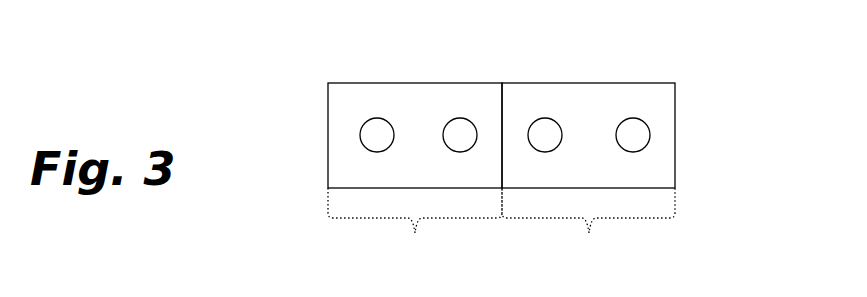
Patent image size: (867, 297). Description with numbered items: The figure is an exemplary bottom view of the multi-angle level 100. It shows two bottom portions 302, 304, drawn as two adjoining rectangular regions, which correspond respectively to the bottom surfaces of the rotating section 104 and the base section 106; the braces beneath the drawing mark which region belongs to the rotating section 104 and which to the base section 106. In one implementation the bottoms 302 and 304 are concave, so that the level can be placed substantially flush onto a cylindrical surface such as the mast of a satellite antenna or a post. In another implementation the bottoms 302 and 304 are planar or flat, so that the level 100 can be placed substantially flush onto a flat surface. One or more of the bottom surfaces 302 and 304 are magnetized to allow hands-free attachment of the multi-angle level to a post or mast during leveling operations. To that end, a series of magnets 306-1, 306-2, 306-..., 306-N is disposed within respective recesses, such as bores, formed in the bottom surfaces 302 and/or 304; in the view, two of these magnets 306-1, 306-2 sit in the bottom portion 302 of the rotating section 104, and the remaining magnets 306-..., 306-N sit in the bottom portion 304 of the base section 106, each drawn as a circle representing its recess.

The multi-angle level 100 is at (180, 71).
The bottom portion 302 is at (455, 102).
The bottom portion 304 is at (613, 100).
The magnet 306-1 is at (374, 134).
The magnet 306-2 is at (463, 137).
The magnet 306-... is at (548, 130).
The magnet 306-N is at (635, 137).
The rotating section 104 is at (415, 228).
The base section 106 is at (588, 228).